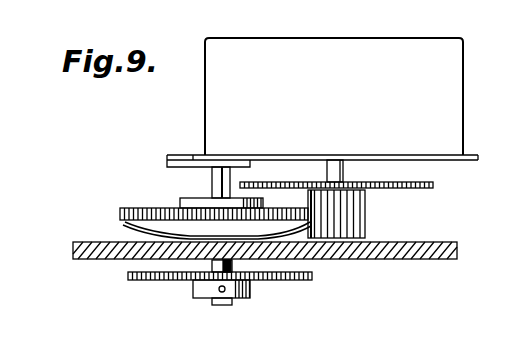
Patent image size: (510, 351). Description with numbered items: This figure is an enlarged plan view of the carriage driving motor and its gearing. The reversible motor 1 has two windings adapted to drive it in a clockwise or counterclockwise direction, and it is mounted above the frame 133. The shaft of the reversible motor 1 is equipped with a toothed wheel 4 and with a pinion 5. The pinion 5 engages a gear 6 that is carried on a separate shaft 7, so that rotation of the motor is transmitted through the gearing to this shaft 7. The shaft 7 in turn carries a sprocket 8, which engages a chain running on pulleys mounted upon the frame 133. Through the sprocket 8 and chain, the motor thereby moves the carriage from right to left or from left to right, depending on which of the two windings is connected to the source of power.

The reversible motor 1 is at (455, 79).
The toothed wheel 4 is at (416, 190).
The pinion 5 is at (366, 218).
The gear 6 is at (140, 207).
The shaft 7 is at (222, 306).
The sprocket 8 is at (290, 283).
The frame 133 is at (82, 242).